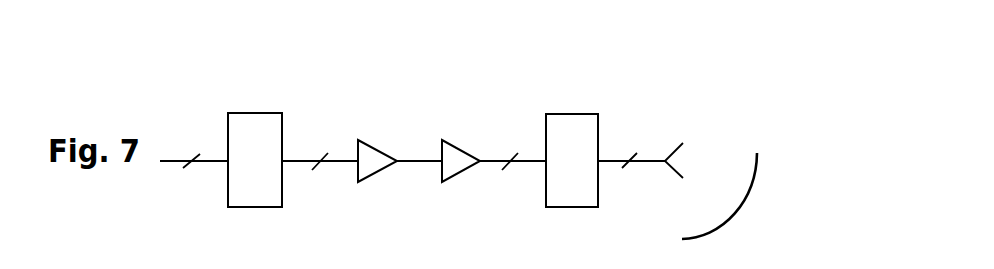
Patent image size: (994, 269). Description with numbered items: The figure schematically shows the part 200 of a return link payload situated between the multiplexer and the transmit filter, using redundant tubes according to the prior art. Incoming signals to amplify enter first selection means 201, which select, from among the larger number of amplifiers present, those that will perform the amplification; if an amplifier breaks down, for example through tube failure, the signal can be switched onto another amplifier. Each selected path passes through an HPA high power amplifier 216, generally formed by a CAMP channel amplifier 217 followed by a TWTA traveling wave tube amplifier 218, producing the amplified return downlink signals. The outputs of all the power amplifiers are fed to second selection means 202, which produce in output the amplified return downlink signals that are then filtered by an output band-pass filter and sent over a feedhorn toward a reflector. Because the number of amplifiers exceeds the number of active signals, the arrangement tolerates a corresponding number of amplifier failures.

The part of a return link payload 200 is at (163, 70).
The first selection means 201 is at (255, 125).
The second selection means 202 is at (570, 123).
The HPA high power amplifier 216 is at (419, 115).
The CAMP channel amplifier 217 is at (372, 153).
The TWTA traveling wave tube amplifier 218 is at (464, 136).